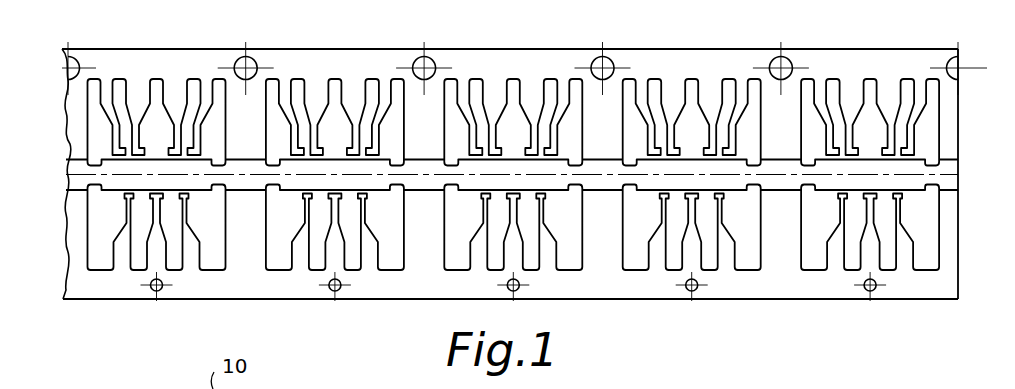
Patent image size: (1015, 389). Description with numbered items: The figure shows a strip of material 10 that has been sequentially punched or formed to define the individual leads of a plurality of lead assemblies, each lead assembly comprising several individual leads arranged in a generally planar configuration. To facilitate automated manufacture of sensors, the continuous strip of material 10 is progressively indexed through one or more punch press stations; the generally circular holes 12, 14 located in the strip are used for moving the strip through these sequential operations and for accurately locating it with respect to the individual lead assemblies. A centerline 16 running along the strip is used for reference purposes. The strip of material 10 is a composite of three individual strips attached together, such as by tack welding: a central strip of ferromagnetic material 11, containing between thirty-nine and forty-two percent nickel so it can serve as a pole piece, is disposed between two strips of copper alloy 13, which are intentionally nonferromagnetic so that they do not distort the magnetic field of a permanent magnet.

The strip of material 10 is at (653, 56).
The central strip of ferromagnetic material 11 is at (957, 165).
The circular hole 12 is at (791, 56).
The strip of copper alloy 13 is at (939, 57).
The circular hole 14 is at (699, 292).
The centerline 16 is at (968, 177).